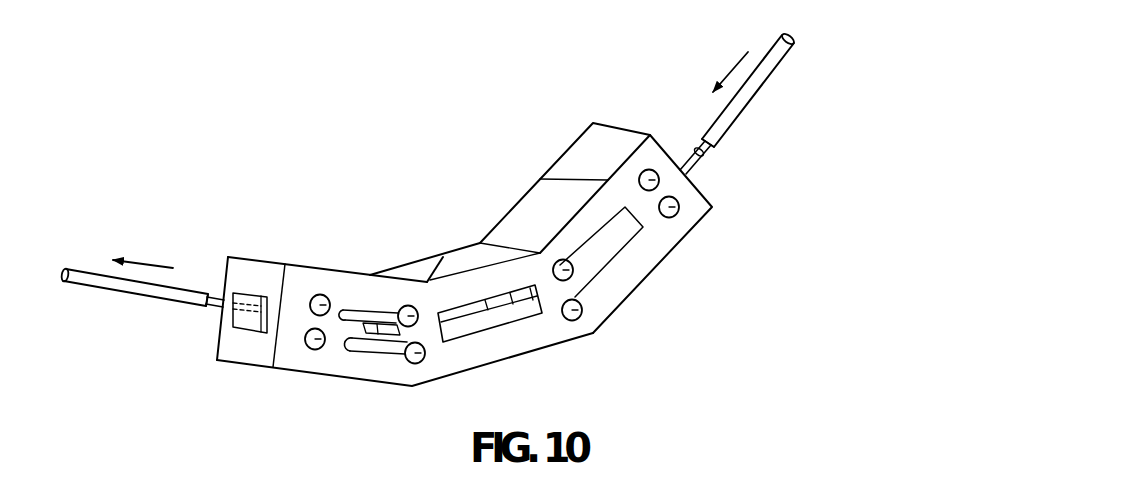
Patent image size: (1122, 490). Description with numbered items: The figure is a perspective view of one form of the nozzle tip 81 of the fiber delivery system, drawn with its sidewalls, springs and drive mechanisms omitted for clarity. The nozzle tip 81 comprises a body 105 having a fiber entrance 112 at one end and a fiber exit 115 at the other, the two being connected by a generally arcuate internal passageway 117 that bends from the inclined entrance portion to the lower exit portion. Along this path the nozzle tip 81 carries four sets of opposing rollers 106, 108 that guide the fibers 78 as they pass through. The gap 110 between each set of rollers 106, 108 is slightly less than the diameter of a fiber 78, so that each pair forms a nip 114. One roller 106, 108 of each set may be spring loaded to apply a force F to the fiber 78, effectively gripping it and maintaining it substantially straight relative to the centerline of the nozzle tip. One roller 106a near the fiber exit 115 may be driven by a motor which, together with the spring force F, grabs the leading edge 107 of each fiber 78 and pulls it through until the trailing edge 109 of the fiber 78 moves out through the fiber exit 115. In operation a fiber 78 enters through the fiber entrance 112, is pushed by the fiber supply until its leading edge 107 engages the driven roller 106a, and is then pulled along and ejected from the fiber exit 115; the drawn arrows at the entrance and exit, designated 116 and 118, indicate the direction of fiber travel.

The fiber 78 is at (97, 283).
The nozzle tip 81 is at (428, 150).
The body 105 is at (583, 152).
The roller 106 is at (553, 270).
The driven roller 106a is at (311, 304).
The leading edge 107 is at (87, 268).
The roller 108 is at (317, 349).
The trailing edge 109 is at (200, 312).
The gap 110 is at (303, 327).
The fiber entrance 112 is at (699, 174).
The nip 114 is at (308, 321).
The fiber exit 115 is at (240, 324).
The feed direction 116 is at (733, 68).
The internal passageway 117 is at (612, 244).
The feed direction 118 is at (152, 262).
The force F is at (322, 292).